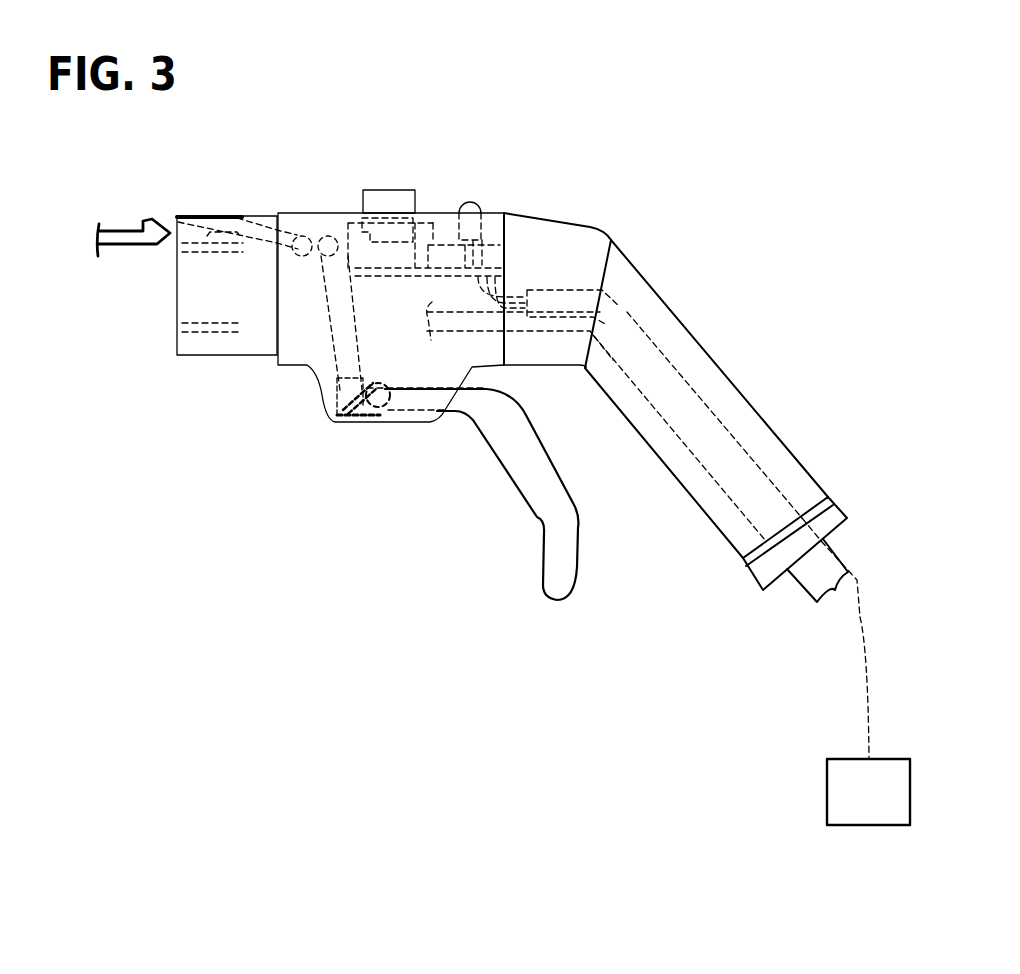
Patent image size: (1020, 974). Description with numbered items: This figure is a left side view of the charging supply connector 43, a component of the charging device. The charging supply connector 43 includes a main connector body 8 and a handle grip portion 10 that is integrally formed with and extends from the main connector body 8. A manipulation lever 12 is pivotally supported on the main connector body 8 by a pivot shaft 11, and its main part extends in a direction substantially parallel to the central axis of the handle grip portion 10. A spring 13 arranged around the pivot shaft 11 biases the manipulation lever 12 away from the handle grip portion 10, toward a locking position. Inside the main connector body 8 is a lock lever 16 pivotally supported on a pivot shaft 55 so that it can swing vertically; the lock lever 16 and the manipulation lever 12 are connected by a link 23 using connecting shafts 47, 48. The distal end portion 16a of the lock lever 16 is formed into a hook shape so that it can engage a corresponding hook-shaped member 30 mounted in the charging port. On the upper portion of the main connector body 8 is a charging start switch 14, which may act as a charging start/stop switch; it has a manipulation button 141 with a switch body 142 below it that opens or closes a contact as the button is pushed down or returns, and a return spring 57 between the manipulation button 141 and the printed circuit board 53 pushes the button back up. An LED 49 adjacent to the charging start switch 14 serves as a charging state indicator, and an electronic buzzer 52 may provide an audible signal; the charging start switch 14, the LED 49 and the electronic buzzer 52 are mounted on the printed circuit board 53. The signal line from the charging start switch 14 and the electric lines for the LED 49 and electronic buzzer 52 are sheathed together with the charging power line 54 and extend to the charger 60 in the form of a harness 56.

The main connector body 8 is at (493, 362).
The handle grip portion 10 is at (707, 353).
The pivot shaft 11 is at (375, 413).
The manipulation lever 12 is at (545, 505).
The spring 13 is at (400, 403).
The charging start switch 14 is at (392, 183).
The lock lever 16 is at (243, 217).
The distal end portion 16a is at (193, 213).
The link 23 is at (328, 310).
The hook-shaped member 30 is at (127, 233).
The charging supply connector 43 is at (573, 205).
The connecting shaft 47 is at (326, 236).
The connecting shaft 48 is at (343, 423).
The LED 49 is at (470, 201).
The electronic buzzer 52 is at (492, 262).
The printed circuit board 53 is at (504, 271).
The charging power line 54 is at (528, 332).
The pivot shaft 55 is at (299, 236).
The harness 56 is at (797, 594).
The return spring 57 is at (425, 242).
The charger 60 is at (856, 671).
The manipulation button 141 is at (375, 215).
The switch body 142 is at (415, 245).